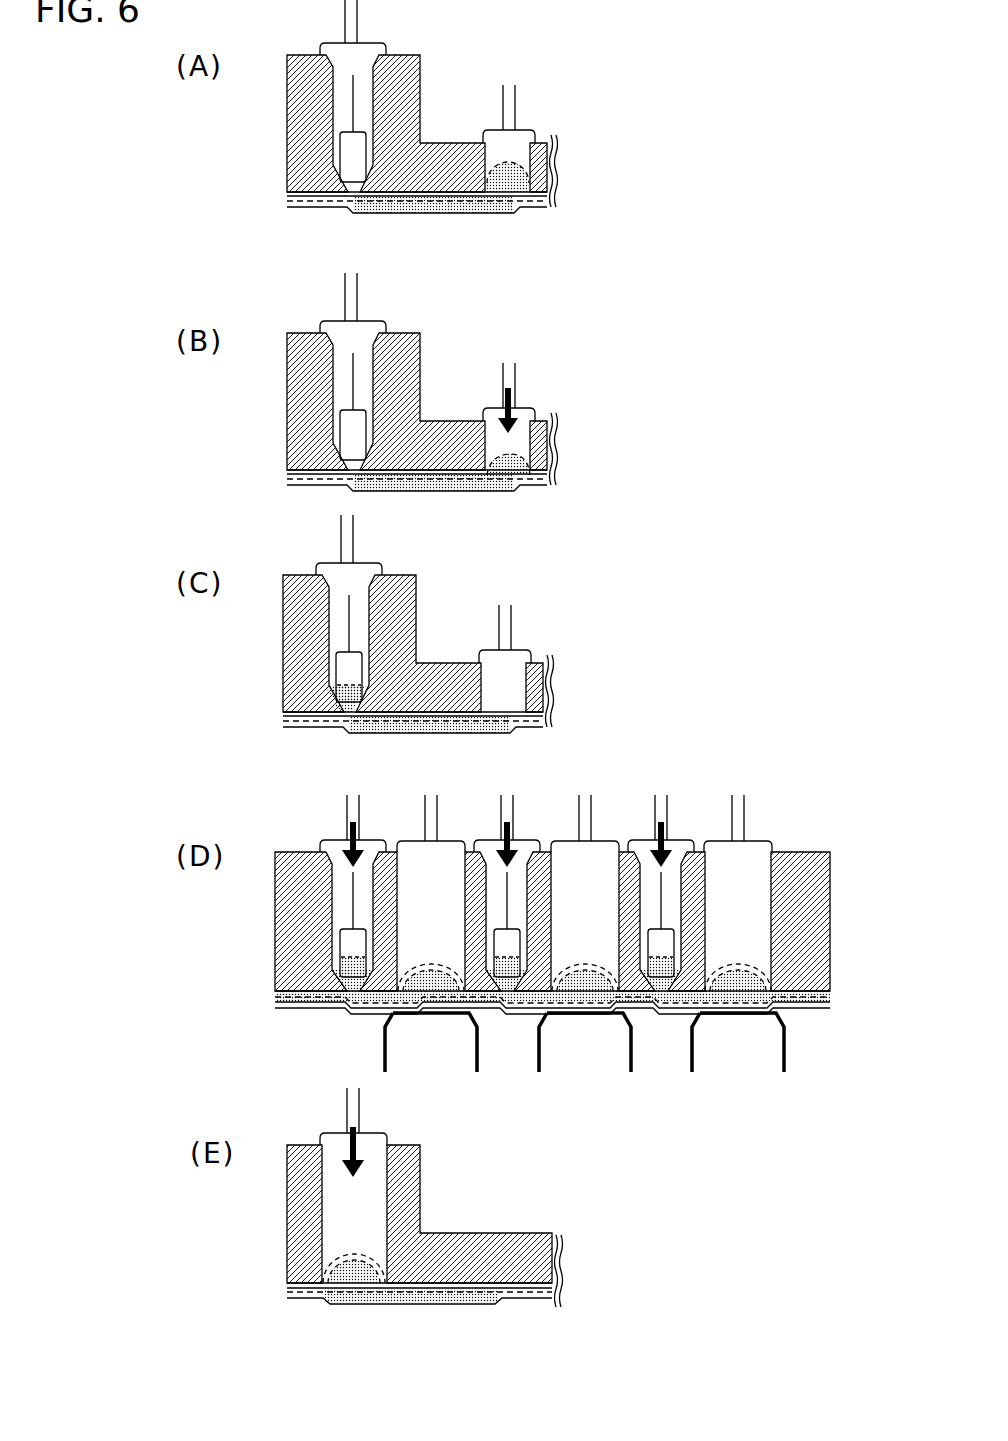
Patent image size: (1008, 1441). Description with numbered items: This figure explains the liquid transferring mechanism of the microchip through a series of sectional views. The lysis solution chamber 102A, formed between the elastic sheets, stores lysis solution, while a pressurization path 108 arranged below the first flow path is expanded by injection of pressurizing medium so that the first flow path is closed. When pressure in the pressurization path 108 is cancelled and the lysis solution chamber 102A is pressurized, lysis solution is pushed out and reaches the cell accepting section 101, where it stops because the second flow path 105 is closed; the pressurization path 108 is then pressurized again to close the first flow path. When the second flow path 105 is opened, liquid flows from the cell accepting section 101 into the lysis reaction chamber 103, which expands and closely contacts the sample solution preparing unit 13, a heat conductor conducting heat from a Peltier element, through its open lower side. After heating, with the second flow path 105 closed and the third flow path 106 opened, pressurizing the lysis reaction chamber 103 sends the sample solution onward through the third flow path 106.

The cell accepting section 101 is at (451, 598).
The pressurization path 108 is at (552, 782).
The lysis solution chamber 102A is at (572, 363).
The lysis reaction chamber 103 is at (569, 1168).
The second flow path 105 is at (545, 1044).
The third flow path 106 is at (419, 1330).
The sample solution preparing unit 13 is at (584, 1047).